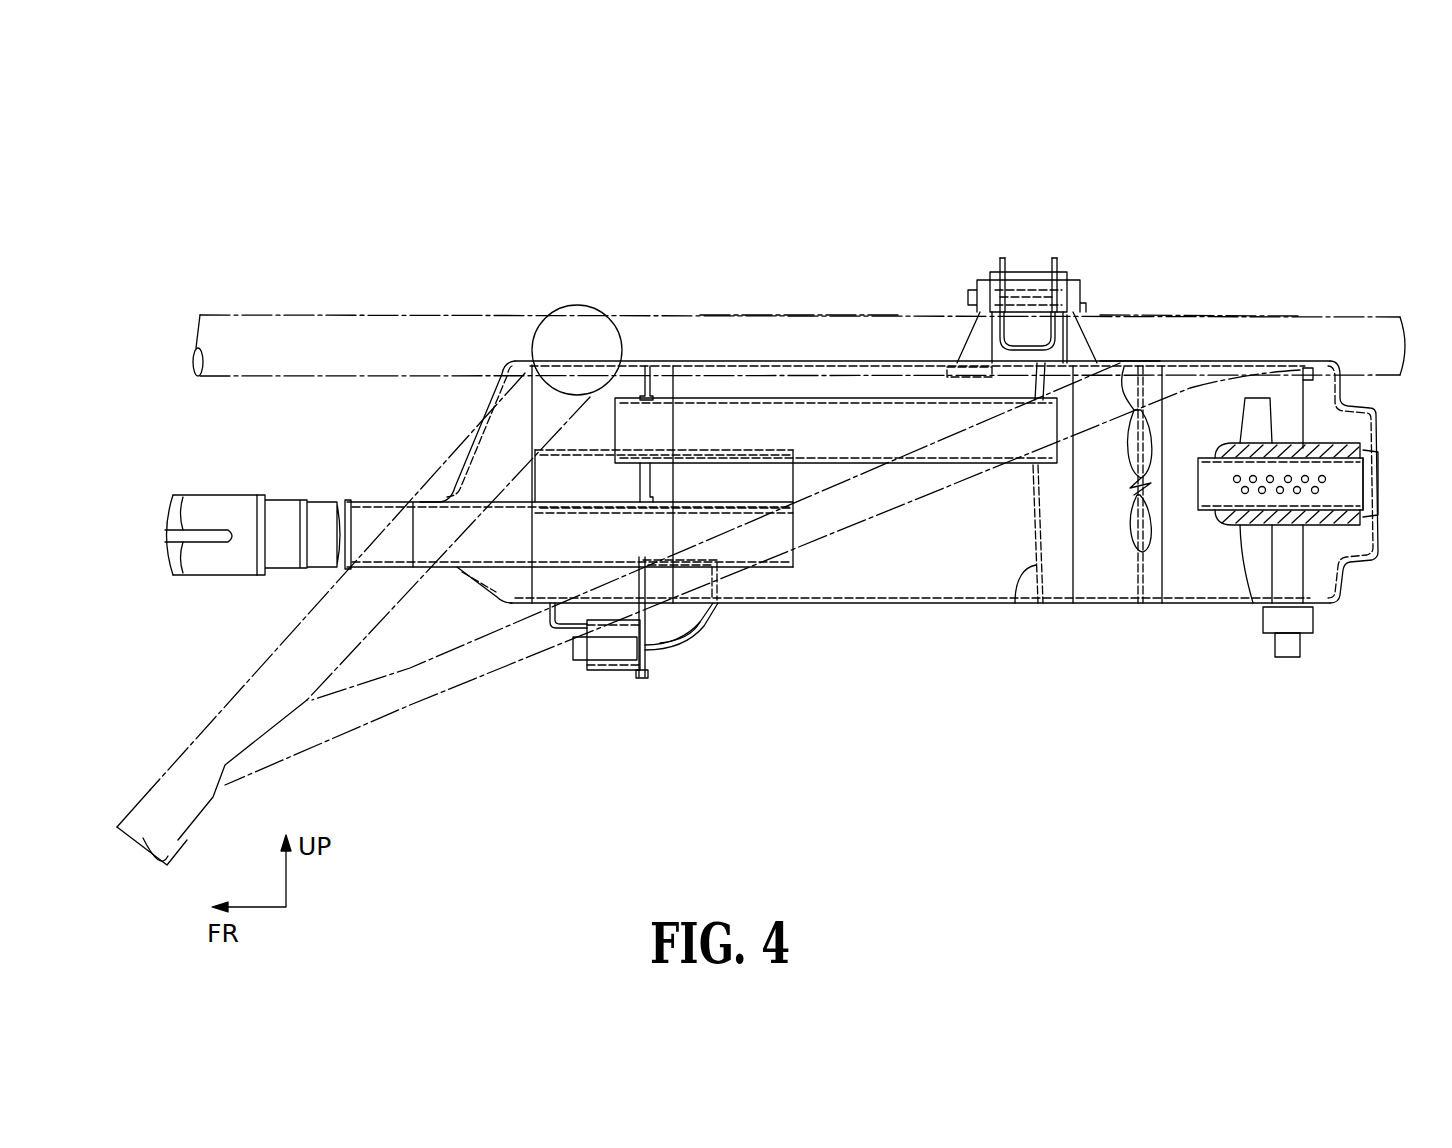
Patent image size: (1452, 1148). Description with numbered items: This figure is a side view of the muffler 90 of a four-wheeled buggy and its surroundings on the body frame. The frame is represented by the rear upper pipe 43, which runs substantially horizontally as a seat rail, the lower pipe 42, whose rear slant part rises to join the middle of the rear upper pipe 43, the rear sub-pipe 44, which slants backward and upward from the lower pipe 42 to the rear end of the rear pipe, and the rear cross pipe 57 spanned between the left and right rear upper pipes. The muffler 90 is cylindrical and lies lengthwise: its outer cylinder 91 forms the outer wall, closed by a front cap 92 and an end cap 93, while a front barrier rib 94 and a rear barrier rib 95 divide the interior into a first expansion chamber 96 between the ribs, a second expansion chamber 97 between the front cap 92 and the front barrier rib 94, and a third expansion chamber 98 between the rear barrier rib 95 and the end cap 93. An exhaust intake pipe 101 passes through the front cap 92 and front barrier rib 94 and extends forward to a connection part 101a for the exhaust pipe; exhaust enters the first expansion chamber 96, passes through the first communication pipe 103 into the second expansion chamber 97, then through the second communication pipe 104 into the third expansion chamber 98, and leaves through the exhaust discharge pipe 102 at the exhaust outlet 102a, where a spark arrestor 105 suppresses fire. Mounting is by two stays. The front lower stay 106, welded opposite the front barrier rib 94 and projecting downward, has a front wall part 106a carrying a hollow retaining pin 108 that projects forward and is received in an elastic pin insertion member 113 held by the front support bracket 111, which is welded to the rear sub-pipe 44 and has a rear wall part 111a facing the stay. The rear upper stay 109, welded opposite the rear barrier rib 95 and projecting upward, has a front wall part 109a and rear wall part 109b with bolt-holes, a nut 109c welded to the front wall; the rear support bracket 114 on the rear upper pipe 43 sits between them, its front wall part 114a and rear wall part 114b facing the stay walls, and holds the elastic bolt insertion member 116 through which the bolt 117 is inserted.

The lower pipe 42 is at (238, 694).
The rear upper pipe 43 is at (831, 316).
The rear sub-pipe 44 is at (427, 700).
The rear cross pipe 57 is at (578, 306).
The muffler 90 is at (804, 461).
The outer cylinder 91 is at (865, 606).
The front cap 92 is at (480, 436).
The end cap 93 is at (1341, 392).
The front barrier rib 94 is at (628, 366).
The rear barrier rib 95 is at (1028, 568).
The first expansion chamber 96 is at (985, 552).
The second expansion chamber 97 is at (600, 433).
The third expansion chamber 98 is at (1117, 582).
The exhaust intake pipe 101 is at (376, 569).
The connection part 101a is at (205, 568).
The exhaust discharge pipe 102 is at (1255, 542).
The exhaust outlet 102a is at (1366, 488).
The first communication pipe 103 is at (808, 590).
The second communication pipe 104 is at (757, 396).
The spark arrestor 105 is at (1122, 364).
The front lower stay 106 is at (690, 625).
The front wall part 106a is at (648, 678).
The retaining pin 108 is at (597, 662).
The rear upper stay 109 is at (1076, 265).
The front wall part 109a is at (1000, 266).
The rear wall part 109b is at (1084, 288).
The nut 109c is at (986, 283).
The front support bracket 111 is at (577, 660).
The rear wall part 111a is at (646, 680).
The pin insertion member 113 is at (612, 672).
The rear support bracket 114 is at (1056, 249).
The front wall part 114a is at (1003, 258).
The rear wall part 114b is at (1054, 258).
The bolt insertion member 116 is at (1028, 275).
The bolt 117 is at (1082, 306).